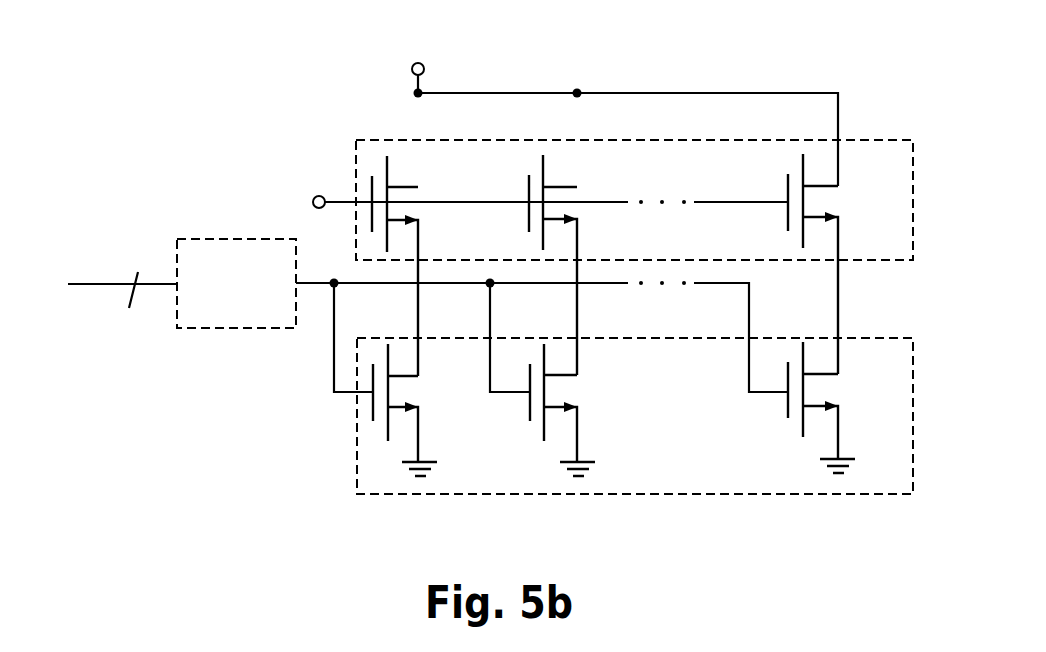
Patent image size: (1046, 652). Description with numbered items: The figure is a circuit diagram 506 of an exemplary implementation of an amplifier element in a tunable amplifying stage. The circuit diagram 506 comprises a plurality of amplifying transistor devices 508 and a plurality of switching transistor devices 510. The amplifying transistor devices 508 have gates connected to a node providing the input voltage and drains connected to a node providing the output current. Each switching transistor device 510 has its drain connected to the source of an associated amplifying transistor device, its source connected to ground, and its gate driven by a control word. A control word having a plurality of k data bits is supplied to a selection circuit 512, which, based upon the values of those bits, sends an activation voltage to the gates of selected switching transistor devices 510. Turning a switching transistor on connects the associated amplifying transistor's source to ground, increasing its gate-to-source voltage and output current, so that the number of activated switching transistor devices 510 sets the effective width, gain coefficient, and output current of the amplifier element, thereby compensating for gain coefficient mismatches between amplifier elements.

The circuit diagram 506 is at (145, 41).
The amplifying transistor devices 508 is at (893, 140).
The switching transistor devices 510 is at (894, 338).
The selection circuit 512 is at (217, 298).